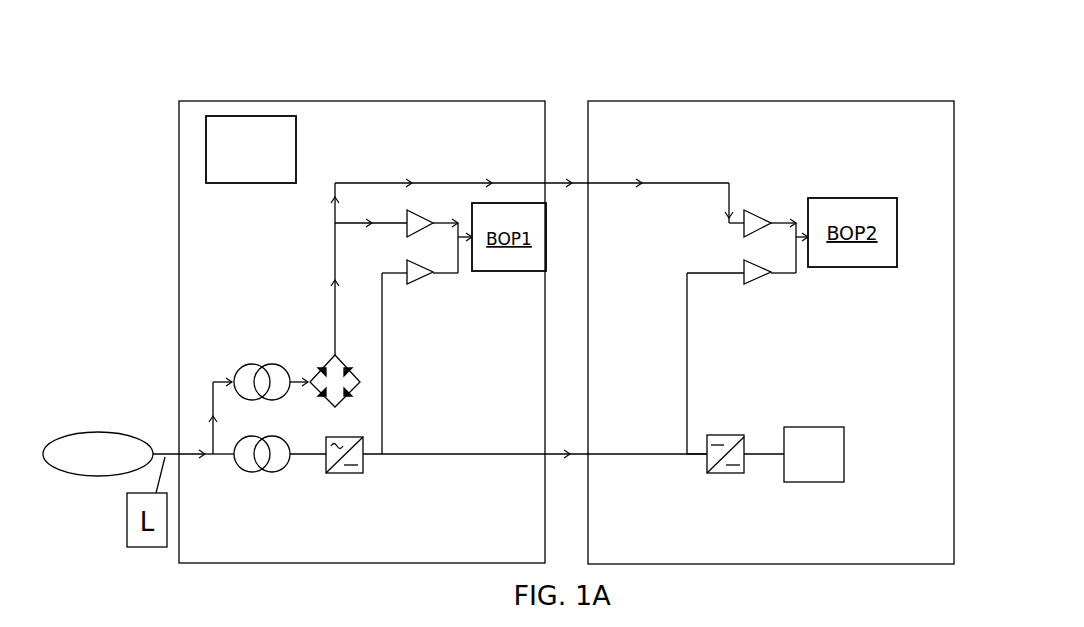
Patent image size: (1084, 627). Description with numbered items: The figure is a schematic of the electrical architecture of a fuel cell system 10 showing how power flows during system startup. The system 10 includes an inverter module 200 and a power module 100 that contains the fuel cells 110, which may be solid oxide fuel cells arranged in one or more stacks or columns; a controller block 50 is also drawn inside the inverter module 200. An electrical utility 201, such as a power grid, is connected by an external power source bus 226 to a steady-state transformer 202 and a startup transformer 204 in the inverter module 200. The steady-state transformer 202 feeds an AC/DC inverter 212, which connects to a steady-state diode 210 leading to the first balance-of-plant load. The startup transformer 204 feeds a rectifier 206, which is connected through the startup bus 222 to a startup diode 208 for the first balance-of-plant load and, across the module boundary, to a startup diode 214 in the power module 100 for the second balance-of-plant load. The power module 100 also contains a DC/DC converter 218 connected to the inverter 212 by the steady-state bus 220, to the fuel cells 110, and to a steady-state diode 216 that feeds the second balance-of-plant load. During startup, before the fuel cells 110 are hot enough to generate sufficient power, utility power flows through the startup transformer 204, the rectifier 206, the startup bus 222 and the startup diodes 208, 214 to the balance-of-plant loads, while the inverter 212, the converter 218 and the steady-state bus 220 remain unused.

The fuel cell system 10 is at (566, 287).
The inverter module 200 is at (300, 101).
The power module 100 is at (770, 101).
The controller 50 is at (251, 149).
The electrical utility 201 is at (98, 432).
The steady-state transformer 202 is at (262, 454).
The startup transformer 204 is at (247, 363).
The rectifier 206 is at (320, 363).
The startup diode 208 is at (410, 218).
The steady-state diode 210 is at (410, 280).
The AC/DC inverter 212 is at (340, 472).
The startup diode 214 is at (751, 215).
The steady-state diode 216 is at (752, 274).
The DC/DC converter 218 is at (723, 470).
The steady-state bus 220 is at (569, 454).
The startup bus 222 is at (333, 238).
The external power source bus 226 is at (213, 450).
The fuel cells 110 is at (823, 480).